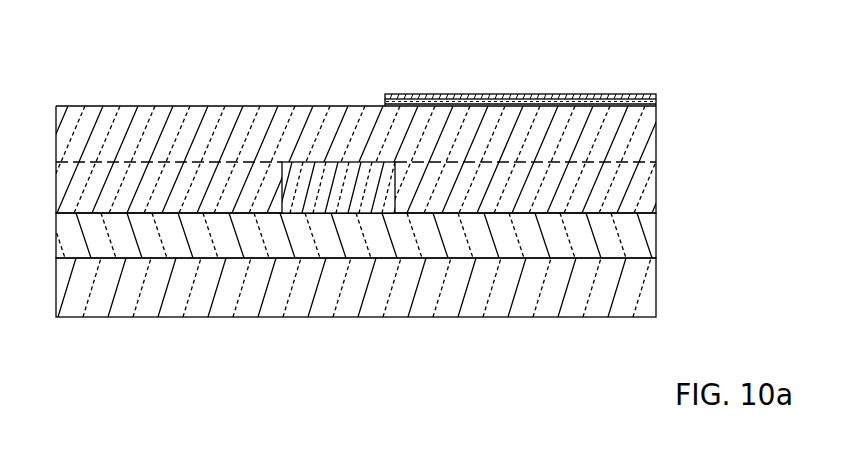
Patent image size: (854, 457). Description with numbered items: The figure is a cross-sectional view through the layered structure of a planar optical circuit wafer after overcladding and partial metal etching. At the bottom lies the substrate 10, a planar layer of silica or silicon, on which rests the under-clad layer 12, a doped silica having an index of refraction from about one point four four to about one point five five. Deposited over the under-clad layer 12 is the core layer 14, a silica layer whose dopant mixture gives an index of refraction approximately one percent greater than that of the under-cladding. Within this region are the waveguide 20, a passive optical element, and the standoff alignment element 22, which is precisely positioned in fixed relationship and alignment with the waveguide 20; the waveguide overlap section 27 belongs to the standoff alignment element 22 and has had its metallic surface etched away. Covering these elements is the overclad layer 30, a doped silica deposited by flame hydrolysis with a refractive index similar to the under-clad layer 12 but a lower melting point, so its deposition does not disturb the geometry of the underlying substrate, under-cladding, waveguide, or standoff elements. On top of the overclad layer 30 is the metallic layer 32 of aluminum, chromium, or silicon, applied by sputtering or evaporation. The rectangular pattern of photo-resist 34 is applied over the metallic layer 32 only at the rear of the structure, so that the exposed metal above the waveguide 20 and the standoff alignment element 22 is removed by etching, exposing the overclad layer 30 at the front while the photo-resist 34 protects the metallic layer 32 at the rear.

The substrate 10 is at (657, 282).
The under-clad layer 12 is at (657, 232).
The core layer 14 is at (657, 190).
The waveguide 20 is at (513, 160).
The standoff alignment element 22 is at (148, 162).
The waveguide overlap section 27 is at (332, 182).
The overclad layer 30 is at (657, 131).
The metallic layer 32 is at (657, 102).
The photo-resist 34 is at (612, 93).